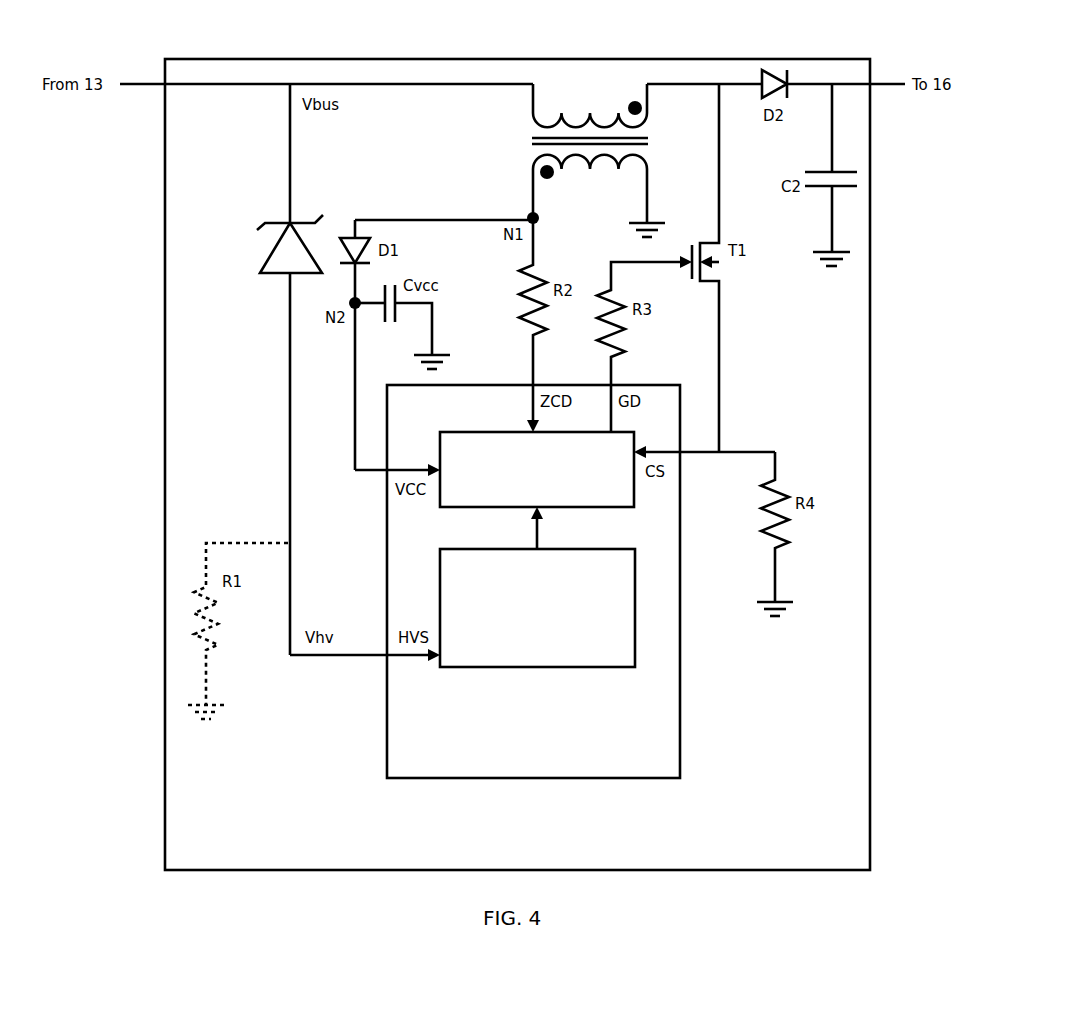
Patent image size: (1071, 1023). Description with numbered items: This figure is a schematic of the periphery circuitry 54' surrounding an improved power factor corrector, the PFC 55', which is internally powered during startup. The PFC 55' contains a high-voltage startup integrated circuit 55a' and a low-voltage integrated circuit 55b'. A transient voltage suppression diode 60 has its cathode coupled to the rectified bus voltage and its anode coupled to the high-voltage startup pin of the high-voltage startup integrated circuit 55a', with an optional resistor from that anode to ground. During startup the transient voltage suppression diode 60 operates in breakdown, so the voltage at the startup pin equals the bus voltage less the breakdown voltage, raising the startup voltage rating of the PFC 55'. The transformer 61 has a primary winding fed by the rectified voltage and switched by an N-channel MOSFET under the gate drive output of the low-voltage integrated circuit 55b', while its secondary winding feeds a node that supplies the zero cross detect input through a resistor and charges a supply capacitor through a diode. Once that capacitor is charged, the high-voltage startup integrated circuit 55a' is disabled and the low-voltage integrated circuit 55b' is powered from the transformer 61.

The periphery circuitry 54' is at (517, 490).
The PFC 55' is at (558, 607).
The high-voltage startup integrated circuit 55a' is at (585, 608).
The low-voltage integrated circuit 55b' is at (585, 496).
The transient voltage suppression diode 60 is at (282, 276).
The transformer 61 is at (647, 84).